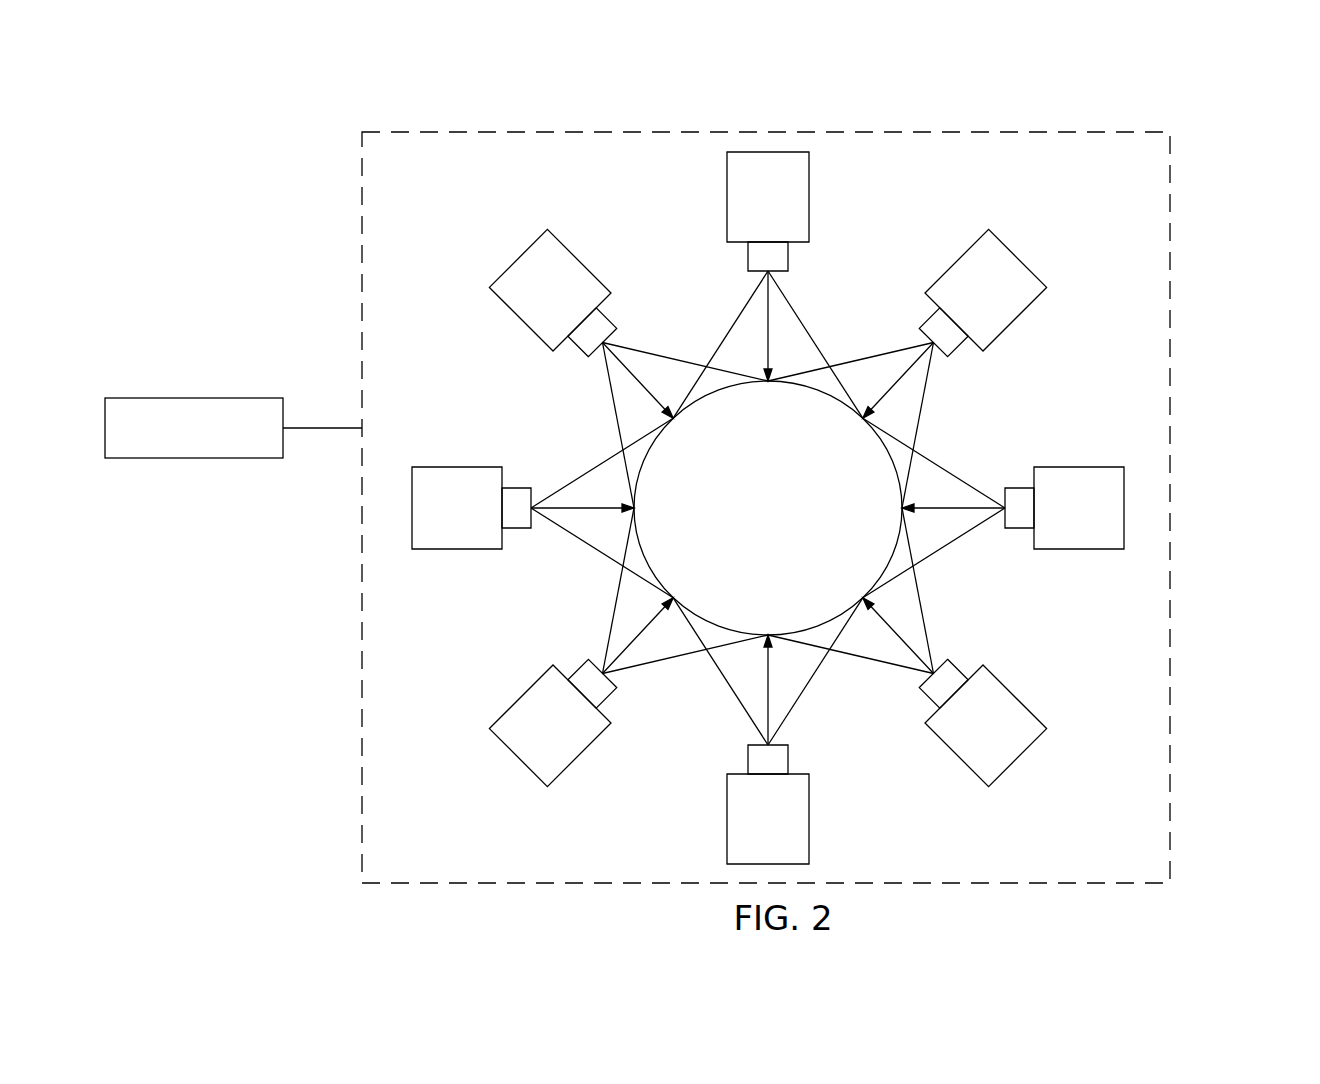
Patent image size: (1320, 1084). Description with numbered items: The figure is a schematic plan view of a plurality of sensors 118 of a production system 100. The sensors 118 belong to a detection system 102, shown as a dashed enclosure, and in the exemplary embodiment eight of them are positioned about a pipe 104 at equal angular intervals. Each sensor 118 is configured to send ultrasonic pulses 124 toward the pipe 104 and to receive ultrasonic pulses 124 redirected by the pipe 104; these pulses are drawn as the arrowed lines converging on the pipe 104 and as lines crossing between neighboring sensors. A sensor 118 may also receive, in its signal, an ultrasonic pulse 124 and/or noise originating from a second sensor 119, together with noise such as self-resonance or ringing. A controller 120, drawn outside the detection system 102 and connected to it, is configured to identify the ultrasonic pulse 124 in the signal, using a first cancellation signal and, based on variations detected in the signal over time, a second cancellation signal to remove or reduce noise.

The production system 100 is at (1193, 115).
The detection system 102 is at (266, 198).
The pipe 104 is at (913, 446).
The sensor 118 is at (727, 192).
The second sensor 119 is at (1018, 252).
The controller 120 is at (193, 398).
The ultrasonic pulse 124 is at (719, 350).